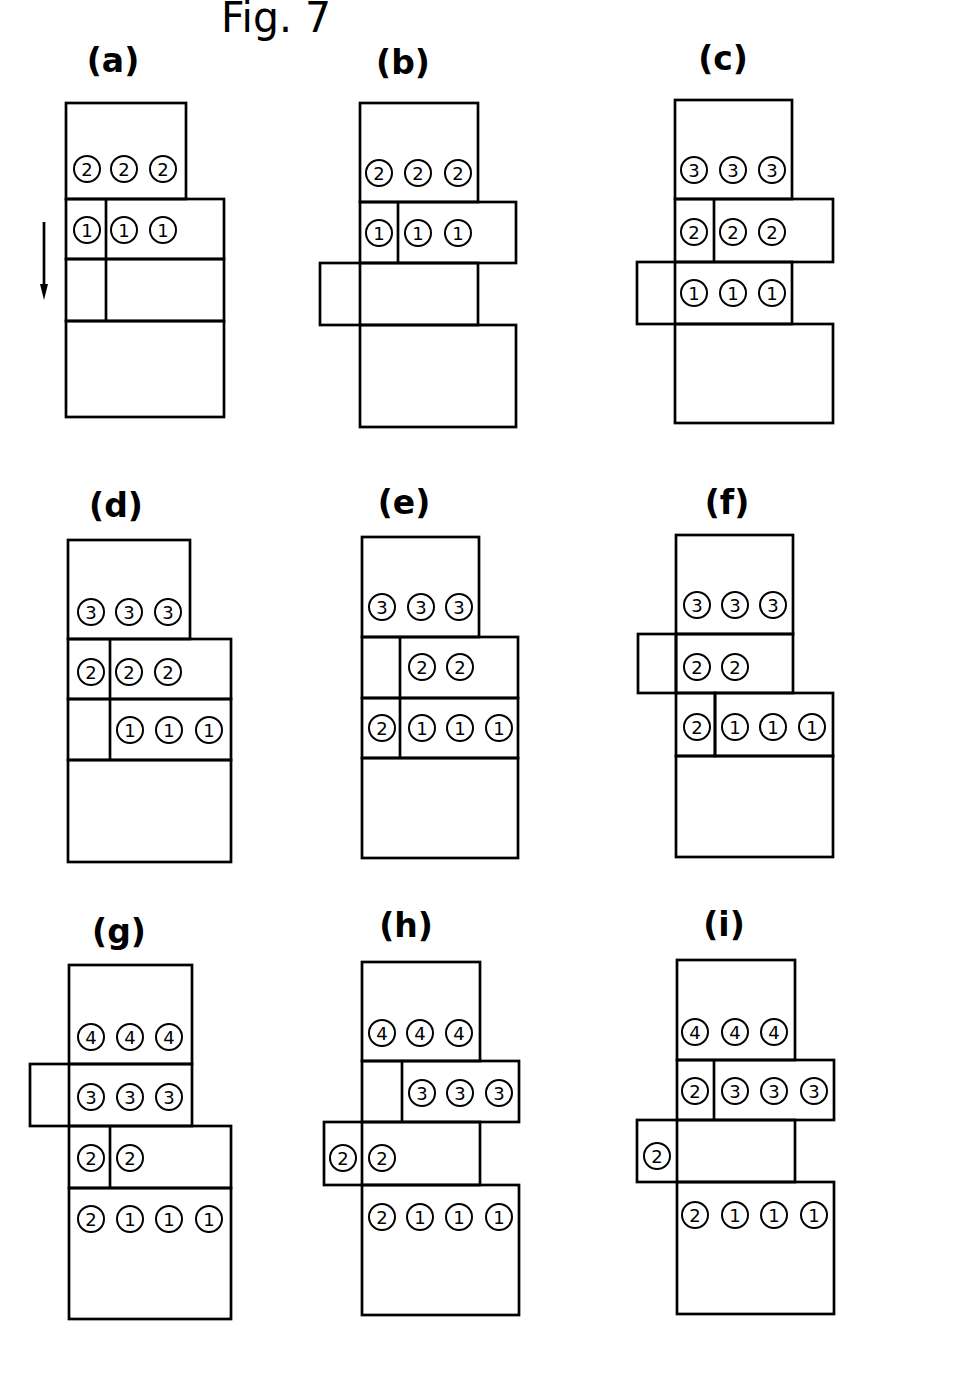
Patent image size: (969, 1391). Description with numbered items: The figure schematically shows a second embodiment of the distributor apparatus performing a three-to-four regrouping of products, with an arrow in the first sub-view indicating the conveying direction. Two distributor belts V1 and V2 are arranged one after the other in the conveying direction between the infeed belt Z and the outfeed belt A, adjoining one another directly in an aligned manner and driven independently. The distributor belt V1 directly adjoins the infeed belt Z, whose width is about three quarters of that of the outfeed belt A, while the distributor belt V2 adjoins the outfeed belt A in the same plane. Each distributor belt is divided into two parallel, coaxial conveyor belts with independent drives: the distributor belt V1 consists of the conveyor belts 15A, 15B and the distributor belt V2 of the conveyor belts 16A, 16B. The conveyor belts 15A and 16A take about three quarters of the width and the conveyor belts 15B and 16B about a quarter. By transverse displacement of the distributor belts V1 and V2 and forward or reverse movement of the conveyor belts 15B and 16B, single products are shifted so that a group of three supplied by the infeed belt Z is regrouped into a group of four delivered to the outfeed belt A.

The infeed belt Z is at (799, 134).
The distributor belt V1 is at (824, 194).
The distributor belt V2 is at (800, 297).
The outfeed belt A is at (840, 368).
The conveyor belt 15A is at (785, 665).
The conveyor belt 15B is at (658, 650).
The conveyor belt 16A is at (820, 700).
The conveyor belt 16B is at (683, 747).